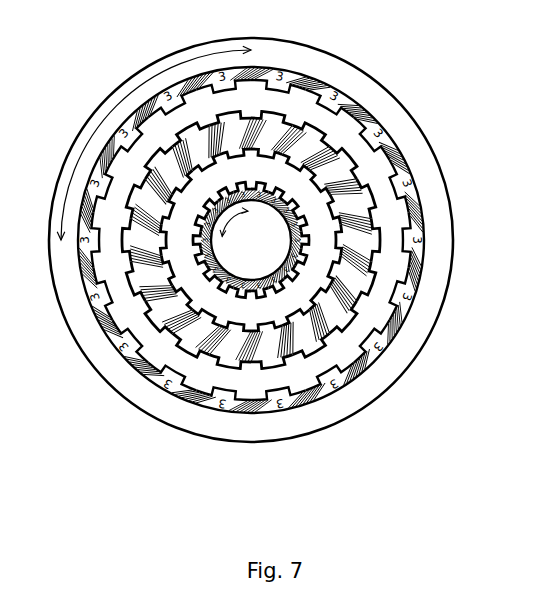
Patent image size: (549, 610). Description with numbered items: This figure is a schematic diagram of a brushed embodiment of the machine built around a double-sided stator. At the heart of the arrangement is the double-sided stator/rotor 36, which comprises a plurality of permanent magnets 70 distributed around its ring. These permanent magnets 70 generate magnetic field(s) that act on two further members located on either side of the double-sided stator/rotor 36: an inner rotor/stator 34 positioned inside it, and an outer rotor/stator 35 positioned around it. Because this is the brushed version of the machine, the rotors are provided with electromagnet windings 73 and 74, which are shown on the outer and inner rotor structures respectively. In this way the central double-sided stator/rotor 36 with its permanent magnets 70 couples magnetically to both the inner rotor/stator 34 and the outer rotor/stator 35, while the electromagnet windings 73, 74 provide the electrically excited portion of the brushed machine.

The inner rotor/stator 34 is at (262, 204).
The outer rotor/stator 35 is at (401, 325).
The double-sided stator/rotor 36 is at (322, 318).
The permanent magnets 70 is at (230, 347).
The electromagnet windings 73 is at (334, 92).
The electromagnet windings 74 is at (203, 273).